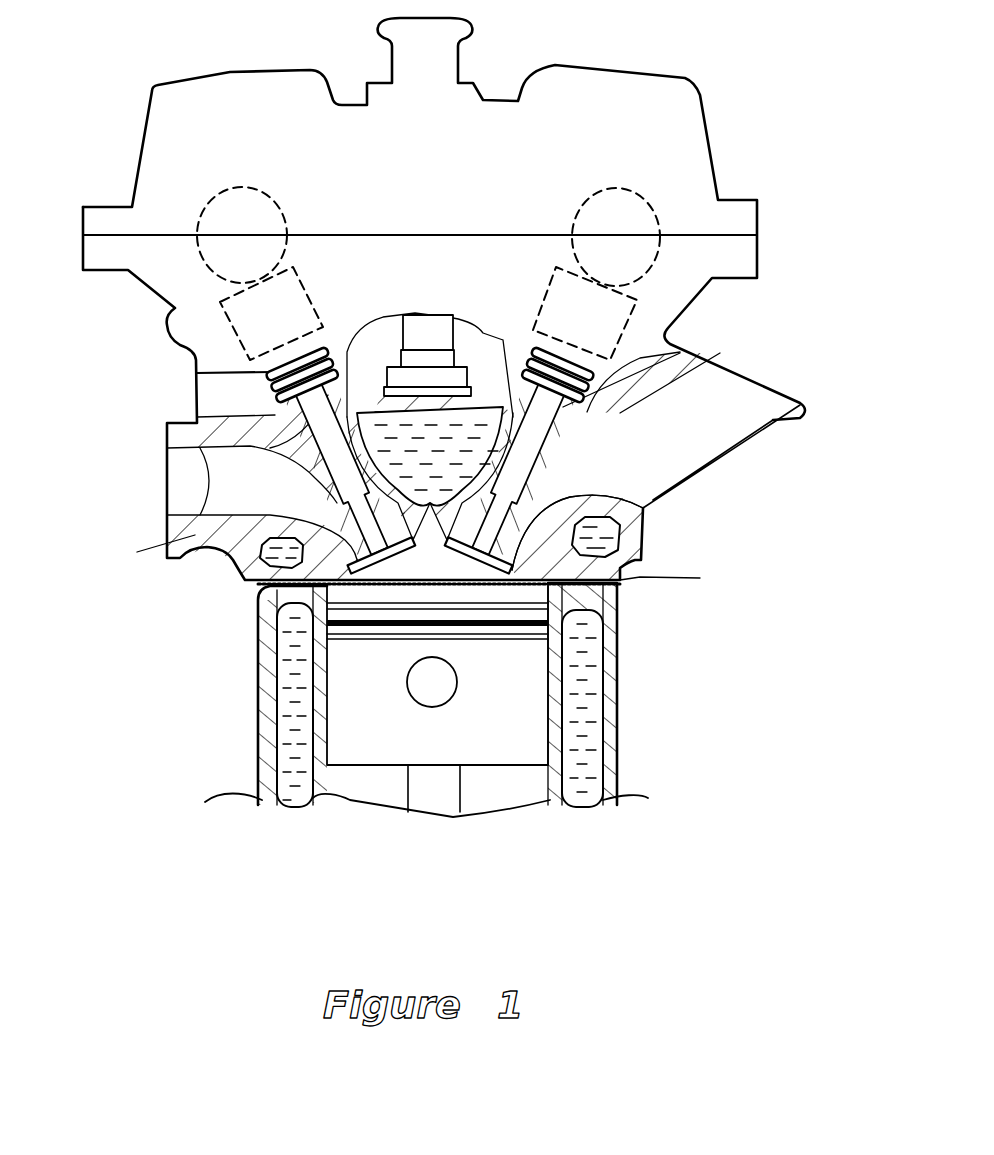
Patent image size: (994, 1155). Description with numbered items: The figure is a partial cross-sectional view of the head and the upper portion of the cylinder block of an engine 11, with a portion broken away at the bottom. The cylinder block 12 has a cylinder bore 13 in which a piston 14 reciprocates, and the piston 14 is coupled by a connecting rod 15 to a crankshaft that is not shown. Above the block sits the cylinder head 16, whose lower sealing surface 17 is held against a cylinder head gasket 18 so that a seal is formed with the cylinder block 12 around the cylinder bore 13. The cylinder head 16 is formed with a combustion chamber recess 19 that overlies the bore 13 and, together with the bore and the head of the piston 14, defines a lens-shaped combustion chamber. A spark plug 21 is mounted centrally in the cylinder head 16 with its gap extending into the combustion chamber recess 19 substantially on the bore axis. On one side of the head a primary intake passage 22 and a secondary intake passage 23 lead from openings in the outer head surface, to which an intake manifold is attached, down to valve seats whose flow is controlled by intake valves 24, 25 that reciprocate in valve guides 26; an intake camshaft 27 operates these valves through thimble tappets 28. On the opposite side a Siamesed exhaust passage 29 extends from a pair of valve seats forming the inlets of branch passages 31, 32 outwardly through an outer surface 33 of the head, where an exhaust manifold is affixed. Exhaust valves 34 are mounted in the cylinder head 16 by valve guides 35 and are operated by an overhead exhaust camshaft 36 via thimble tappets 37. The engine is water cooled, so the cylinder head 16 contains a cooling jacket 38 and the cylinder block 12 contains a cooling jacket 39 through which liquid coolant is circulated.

The engine 11 is at (728, 760).
The cylinder block 12 is at (620, 703).
The cylinder bore 13 is at (332, 685).
The piston 14 is at (340, 740).
The connecting rod 15 is at (433, 805).
The cylinder head 16 is at (748, 455).
The lower sealing surface 17 is at (617, 610).
The cylinder head gasket 18 is at (620, 585).
The combustion chamber recess 19 is at (417, 560).
The spark plug 21 is at (420, 330).
The primary intake passage 22 is at (553, 485).
The secondary intake passage 23 is at (577, 532).
The intake valve 24 is at (770, 423).
The intake valve 25 is at (660, 578).
The valve guide 26 is at (530, 443).
The intake camshaft 27 is at (615, 188).
The thimble tappet 28 is at (547, 290).
The Siamesed exhaust passage 29 is at (168, 486).
The branch passage 31 is at (195, 535).
The branch passage 32 is at (166, 543).
The outer surface 33 is at (165, 440).
The exhaust valve 34 is at (265, 583).
The valve guide 35 is at (323, 442).
The exhaust camshaft 36 is at (228, 190).
The thimble tappet 37 is at (310, 282).
The cooling jacket 38 is at (413, 420).
The cooling jacket 39 is at (282, 630).